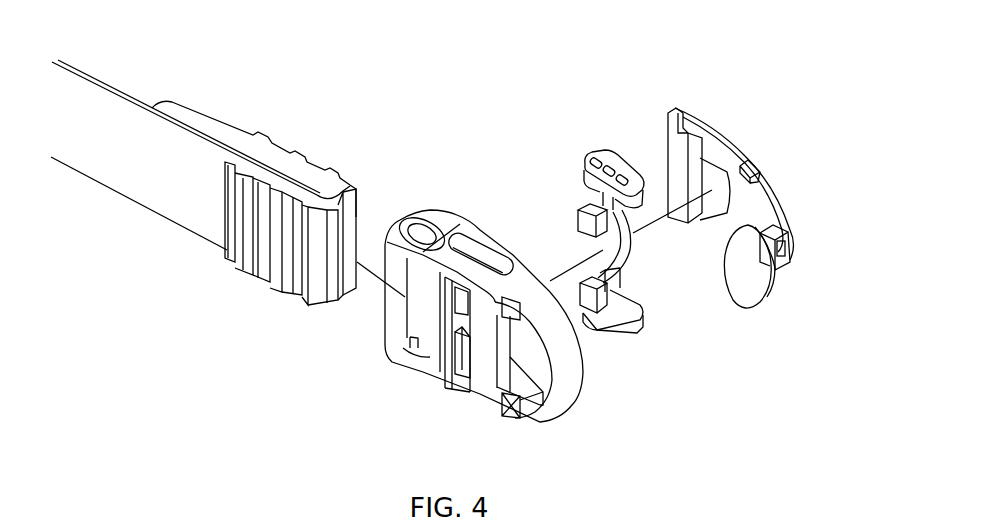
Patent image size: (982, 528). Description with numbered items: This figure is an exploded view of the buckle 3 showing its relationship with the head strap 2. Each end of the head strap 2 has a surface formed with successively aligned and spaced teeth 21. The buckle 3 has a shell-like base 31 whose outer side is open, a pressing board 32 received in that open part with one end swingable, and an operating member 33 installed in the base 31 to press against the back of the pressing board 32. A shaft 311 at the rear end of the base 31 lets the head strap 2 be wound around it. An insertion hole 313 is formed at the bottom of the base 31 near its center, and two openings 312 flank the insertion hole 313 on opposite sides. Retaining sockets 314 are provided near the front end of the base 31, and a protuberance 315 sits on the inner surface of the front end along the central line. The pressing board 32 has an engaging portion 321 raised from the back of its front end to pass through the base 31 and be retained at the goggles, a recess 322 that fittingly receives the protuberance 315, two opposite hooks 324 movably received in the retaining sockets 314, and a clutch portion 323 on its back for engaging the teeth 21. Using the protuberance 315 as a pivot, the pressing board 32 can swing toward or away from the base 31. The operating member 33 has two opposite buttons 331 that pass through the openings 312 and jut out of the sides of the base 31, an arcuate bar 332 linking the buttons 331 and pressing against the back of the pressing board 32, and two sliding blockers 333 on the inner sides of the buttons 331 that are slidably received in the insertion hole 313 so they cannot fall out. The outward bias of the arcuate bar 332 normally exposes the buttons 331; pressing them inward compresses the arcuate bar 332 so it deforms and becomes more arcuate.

The head strap 2 is at (160, 178).
The teeth 21 is at (283, 260).
The buckle 3 is at (643, 453).
The base 31 is at (573, 383).
The shaft 311 is at (415, 315).
The openings 312 is at (485, 250).
The insertion hole 313 is at (457, 370).
The retaining sockets 314 is at (490, 283).
The protuberance 315 is at (537, 403).
The pressing board 32 is at (720, 140).
The engaging portion 321 is at (770, 288).
The recess 322 is at (783, 252).
The clutch portion 323 is at (678, 133).
The hooks 324 is at (755, 170).
The operating member 33 is at (648, 310).
The buttons 331 is at (600, 152).
The arcuate bar 332 is at (633, 267).
The sliding blockers 333 is at (580, 217).